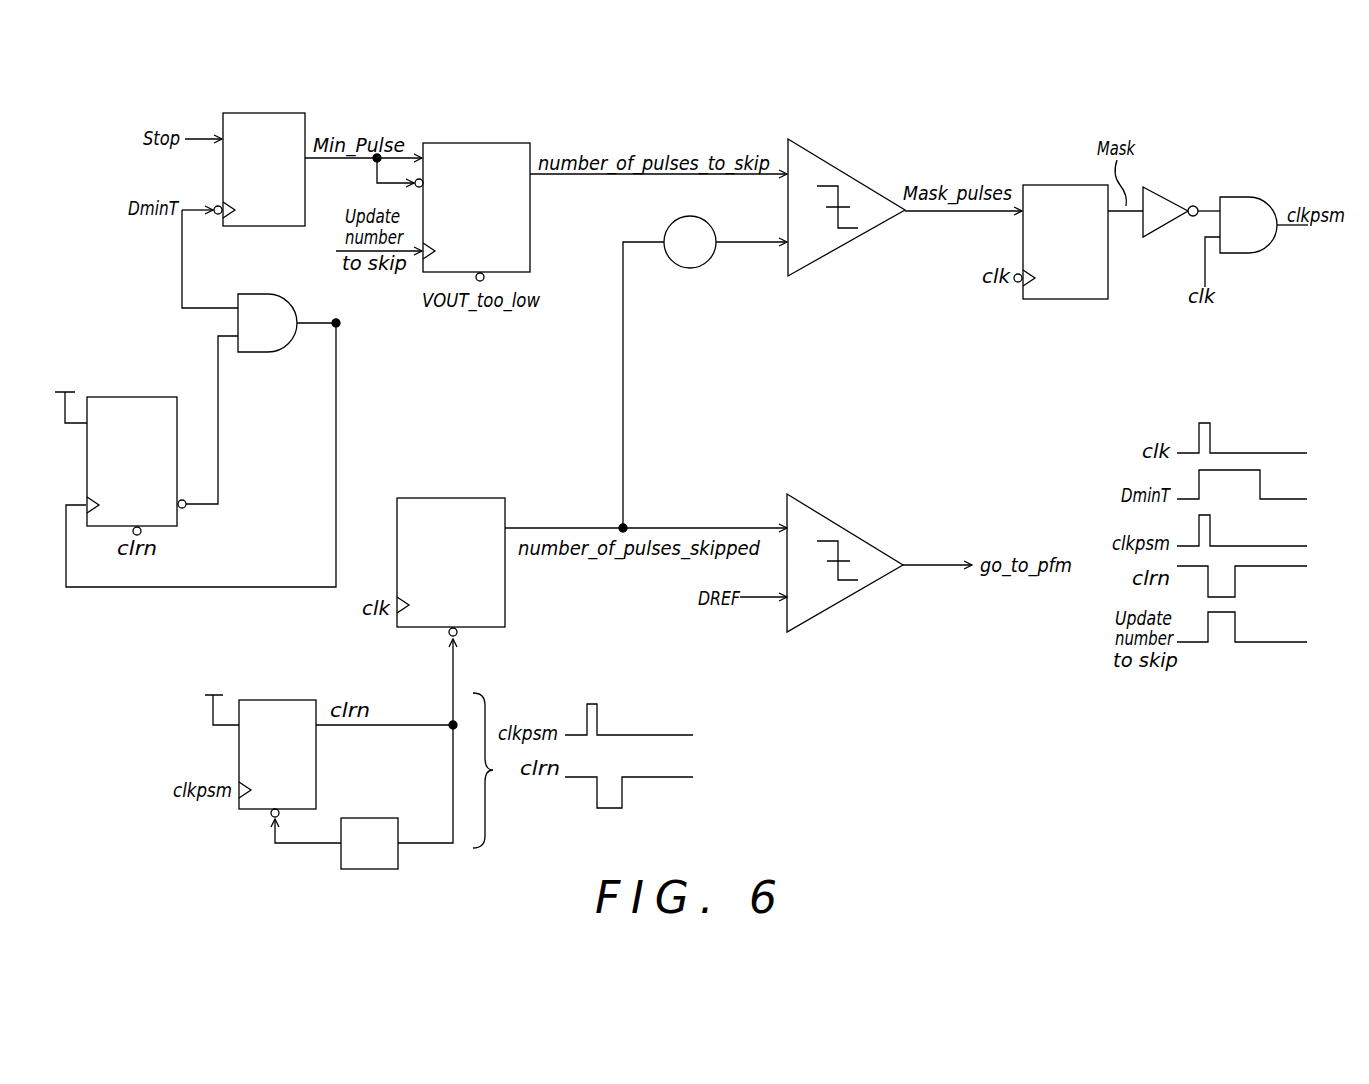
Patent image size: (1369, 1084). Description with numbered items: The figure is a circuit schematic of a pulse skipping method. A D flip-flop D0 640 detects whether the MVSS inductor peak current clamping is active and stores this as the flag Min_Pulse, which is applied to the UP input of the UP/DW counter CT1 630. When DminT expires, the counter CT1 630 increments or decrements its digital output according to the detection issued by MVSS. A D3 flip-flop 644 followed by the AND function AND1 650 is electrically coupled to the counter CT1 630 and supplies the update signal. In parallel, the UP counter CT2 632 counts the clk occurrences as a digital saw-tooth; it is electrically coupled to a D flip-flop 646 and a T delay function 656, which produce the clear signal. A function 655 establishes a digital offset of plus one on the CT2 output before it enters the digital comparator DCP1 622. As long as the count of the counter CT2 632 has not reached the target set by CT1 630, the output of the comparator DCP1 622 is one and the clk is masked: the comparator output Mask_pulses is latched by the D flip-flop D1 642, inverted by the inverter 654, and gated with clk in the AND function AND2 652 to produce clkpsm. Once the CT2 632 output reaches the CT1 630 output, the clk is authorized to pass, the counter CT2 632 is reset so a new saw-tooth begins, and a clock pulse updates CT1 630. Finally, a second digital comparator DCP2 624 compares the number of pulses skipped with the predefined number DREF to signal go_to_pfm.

The D flip-flop D0 640 is at (263, 88).
The UP/DW counter CT1 630 is at (480, 118).
The comparator DCP1 622 is at (838, 168).
The D flip-flop D1 642 is at (1064, 165).
The inverter 654 is at (1165, 187).
The AND function AND2 652 is at (1255, 193).
The digital offset function 655 is at (672, 219).
The AND function AND1 650 is at (268, 290).
The D3 flip-flop 644 is at (141, 376).
The UP counter CT2 632 is at (452, 476).
The comparator DCP2 624 is at (838, 524).
The D flip-flop 646 is at (295, 697).
The T (delay) function 656 is at (360, 818).